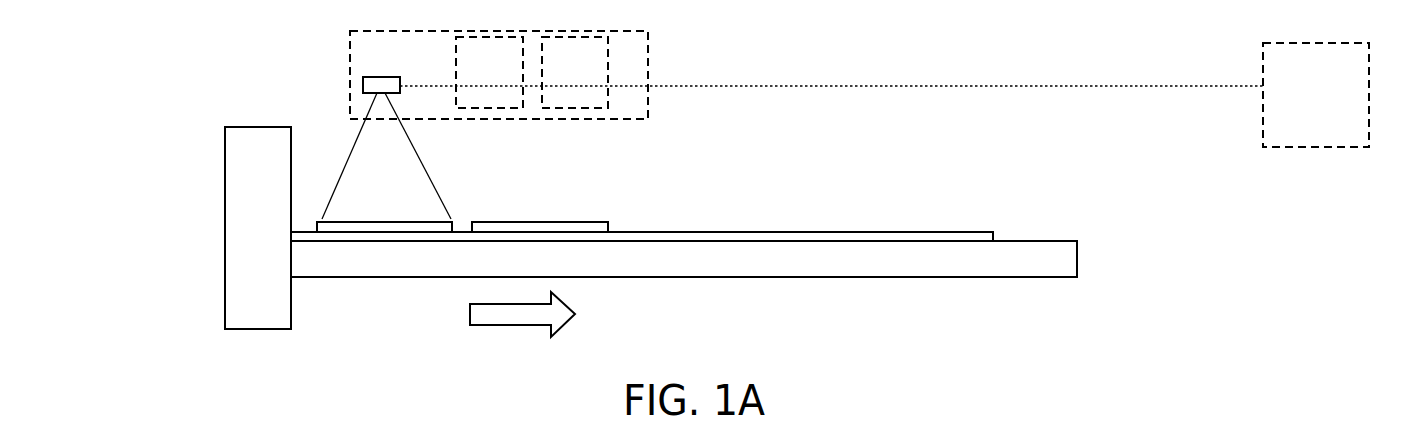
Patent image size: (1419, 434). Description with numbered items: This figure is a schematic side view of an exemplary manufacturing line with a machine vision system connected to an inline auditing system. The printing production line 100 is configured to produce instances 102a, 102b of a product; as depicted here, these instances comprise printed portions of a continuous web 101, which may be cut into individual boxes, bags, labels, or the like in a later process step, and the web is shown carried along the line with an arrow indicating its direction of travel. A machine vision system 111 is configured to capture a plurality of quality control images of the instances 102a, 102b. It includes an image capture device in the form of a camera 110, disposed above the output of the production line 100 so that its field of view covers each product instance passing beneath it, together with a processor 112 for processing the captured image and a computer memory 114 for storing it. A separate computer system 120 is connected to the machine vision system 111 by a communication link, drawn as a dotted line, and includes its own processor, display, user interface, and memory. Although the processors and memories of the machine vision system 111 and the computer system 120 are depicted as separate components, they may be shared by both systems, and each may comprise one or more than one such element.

The printing production line 100 is at (150, 210).
The continuous web 101 is at (661, 231).
The instance of a product 102a is at (393, 242).
The instance of a product 102b is at (537, 222).
The camera 110 is at (382, 77).
The machine vision system 111 is at (348, 68).
The processor 112 is at (472, 87).
The computer memory 114 is at (558, 87).
The computer system 120 is at (1300, 106).